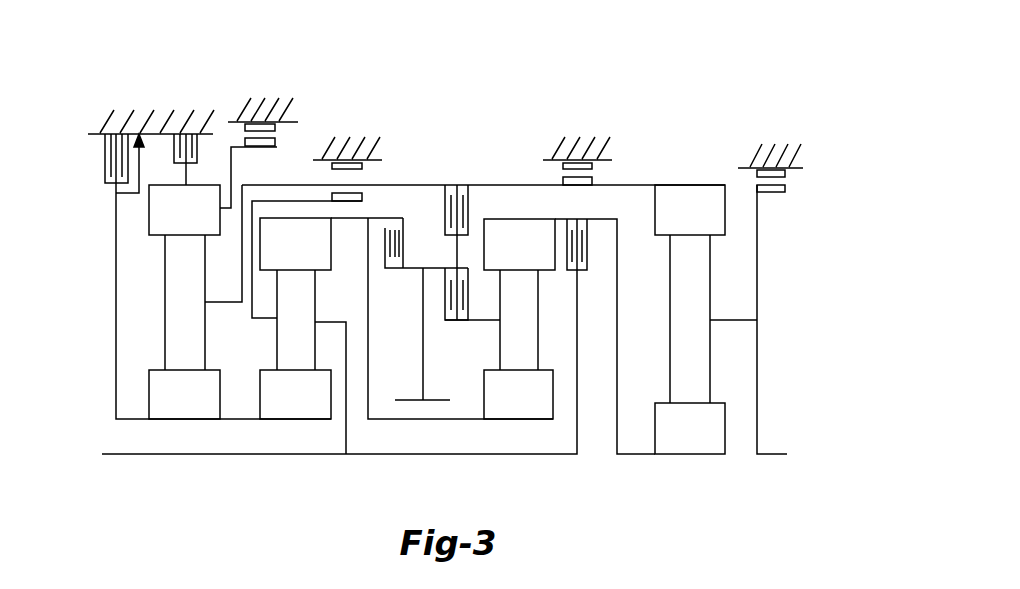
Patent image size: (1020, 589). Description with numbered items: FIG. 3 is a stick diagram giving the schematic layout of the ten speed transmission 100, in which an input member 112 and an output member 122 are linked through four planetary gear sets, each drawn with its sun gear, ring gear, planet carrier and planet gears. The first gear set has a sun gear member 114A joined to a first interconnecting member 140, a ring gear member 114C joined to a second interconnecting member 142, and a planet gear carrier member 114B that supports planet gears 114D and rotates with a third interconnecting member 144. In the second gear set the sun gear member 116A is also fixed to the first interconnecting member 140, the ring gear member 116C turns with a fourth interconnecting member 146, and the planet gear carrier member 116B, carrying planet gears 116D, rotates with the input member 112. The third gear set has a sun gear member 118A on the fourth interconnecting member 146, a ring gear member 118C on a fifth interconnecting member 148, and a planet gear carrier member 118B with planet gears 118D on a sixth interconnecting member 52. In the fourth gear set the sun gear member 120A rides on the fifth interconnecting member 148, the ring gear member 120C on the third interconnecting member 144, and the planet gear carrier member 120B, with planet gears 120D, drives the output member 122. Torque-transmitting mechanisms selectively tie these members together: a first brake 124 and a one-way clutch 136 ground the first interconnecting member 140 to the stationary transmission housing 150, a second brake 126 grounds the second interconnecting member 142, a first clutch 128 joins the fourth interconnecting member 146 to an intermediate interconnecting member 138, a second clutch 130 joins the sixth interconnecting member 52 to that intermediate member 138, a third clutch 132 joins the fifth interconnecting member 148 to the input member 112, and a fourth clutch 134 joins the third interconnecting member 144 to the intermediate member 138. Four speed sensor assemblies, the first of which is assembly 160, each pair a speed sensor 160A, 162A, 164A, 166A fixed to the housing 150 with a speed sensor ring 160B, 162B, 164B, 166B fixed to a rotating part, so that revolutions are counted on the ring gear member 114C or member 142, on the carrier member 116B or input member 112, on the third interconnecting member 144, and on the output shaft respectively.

The sixth interconnecting shaft or member 52 is at (457, 322).
The ten speed transmission 100 is at (713, 112).
The input member 112 is at (97, 483).
The sun gear member 114A is at (166, 408).
The planet gear carrier member 114B is at (224, 302).
The ring gear member 114C is at (166, 223).
The planet gears 114D is at (165, 274).
The sun gear member 116A is at (277, 408).
The planet gear carrier member 116B is at (322, 320).
The ring gear member 116C is at (277, 257).
The planet gears 116D is at (277, 335).
The sun gear member 118A is at (501, 408).
The planet gear carrier member 118B is at (482, 322).
The ring gear member 118C is at (501, 257).
The planet gears 118D is at (538, 357).
The sun gear member 120A is at (672, 441).
The planet gear carrier member 120B is at (733, 320).
The ring gear member 120C is at (672, 223).
The planet gears 120D is at (712, 262).
The output member 122 is at (757, 368).
The first brake 124 is at (199, 153).
The second brake 126 is at (105, 167).
The first clutch 128 is at (405, 262).
The second clutch 130 is at (445, 292).
The third clutch 132 is at (590, 240).
The fourth clutch 134 is at (469, 200).
The one-way clutch 136 is at (116, 193).
The intermediate interconnecting shaft or member 138 is at (423, 340).
The first interconnecting shaft or member 140 is at (116, 250).
The second interconnecting shaft or member 142 is at (186, 176).
The third interconnecting shaft or member 144 is at (283, 184).
The fourth interconnecting shaft or member 146 is at (353, 219).
The fifth interconnecting shaft or member 148 is at (618, 337).
The transmission housing 150 is at (107, 128).
The first speed sensor assembly 160 is at (265, 75).
The first speed sensor 160A is at (277, 128).
The first speed sensor ring 160B is at (277, 145).
The second speed sensor 162A is at (362, 166).
The second speed sensor ring 162B is at (363, 198).
The third speed sensor 164A is at (563, 166).
The third speed sensor ring 164B is at (563, 180).
The fourth speed sensor 166A is at (785, 173).
The fourth speed sensor ring 166B is at (772, 193).